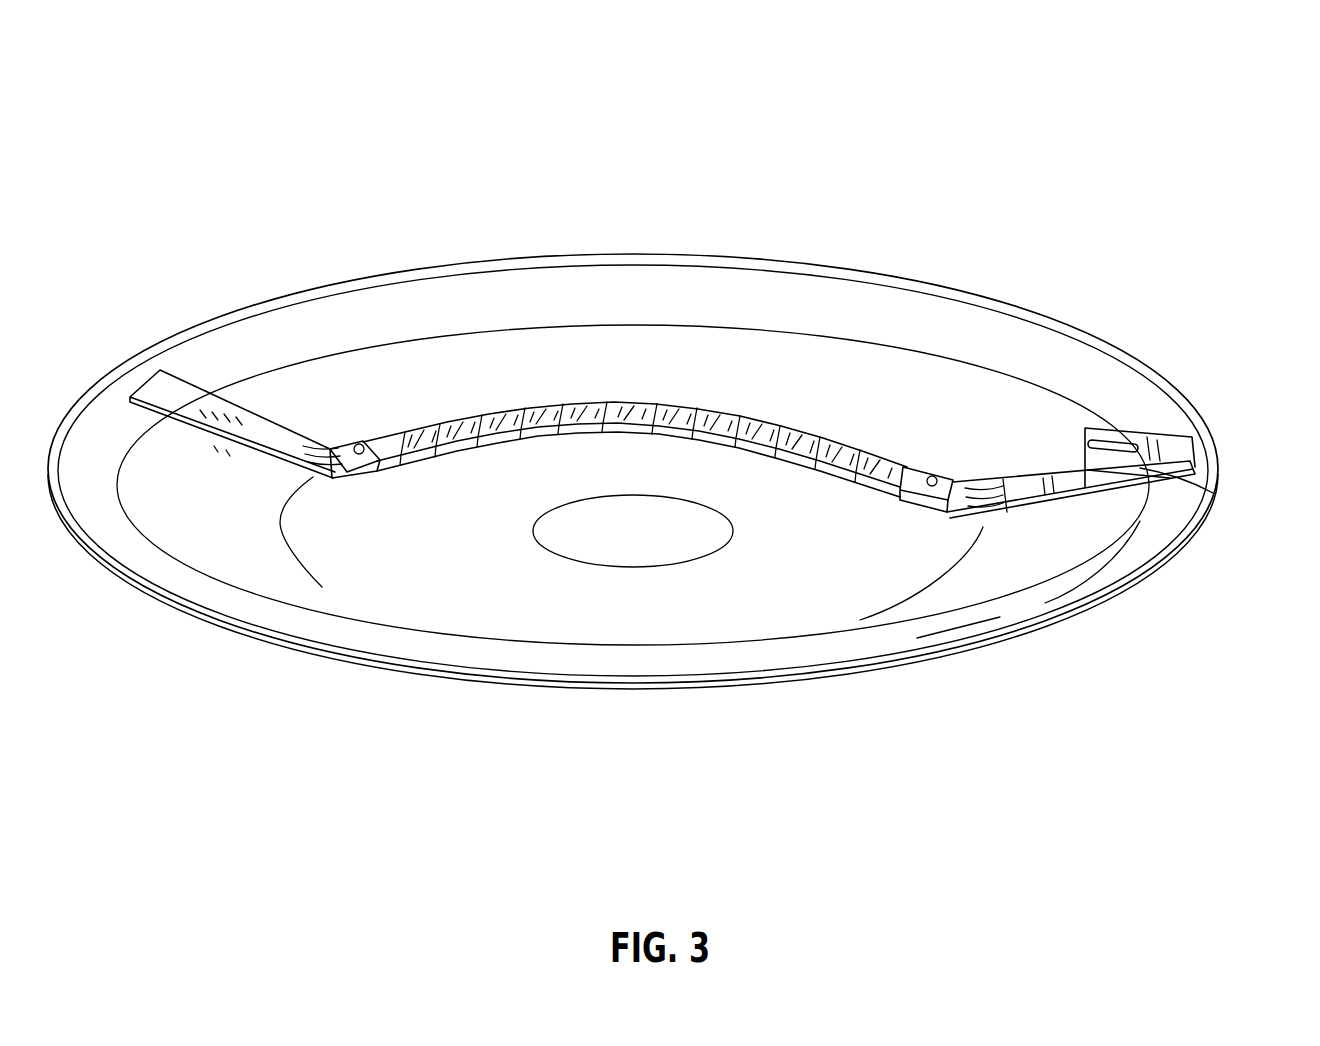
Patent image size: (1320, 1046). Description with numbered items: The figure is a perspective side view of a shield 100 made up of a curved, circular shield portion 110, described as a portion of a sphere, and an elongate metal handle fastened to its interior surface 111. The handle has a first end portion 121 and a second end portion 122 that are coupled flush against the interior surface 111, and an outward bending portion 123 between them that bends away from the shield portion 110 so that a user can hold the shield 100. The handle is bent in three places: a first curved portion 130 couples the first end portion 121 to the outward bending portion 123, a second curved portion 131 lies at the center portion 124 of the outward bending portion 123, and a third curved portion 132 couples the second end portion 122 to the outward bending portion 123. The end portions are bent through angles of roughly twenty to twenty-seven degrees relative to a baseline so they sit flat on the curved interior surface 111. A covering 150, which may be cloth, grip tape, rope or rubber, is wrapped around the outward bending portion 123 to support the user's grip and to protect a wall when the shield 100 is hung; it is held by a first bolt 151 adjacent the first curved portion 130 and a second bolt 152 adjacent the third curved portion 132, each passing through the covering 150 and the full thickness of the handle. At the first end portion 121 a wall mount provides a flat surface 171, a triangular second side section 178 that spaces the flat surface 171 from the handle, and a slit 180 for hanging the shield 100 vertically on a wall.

The shield 100 is at (1196, 164).
The shield portion 110 is at (427, 670).
The interior surface 111 is at (615, 542).
The first end portion 121 is at (1060, 503).
The second end portion 122 is at (272, 427).
The outward bending portion 123 is at (487, 407).
The center portion 124 is at (645, 405).
The first curved portion 130 is at (980, 523).
The second curved portion 131 is at (648, 434).
The third curved portion 132 is at (273, 522).
The covering 150 is at (836, 441).
The first bolt 151 is at (932, 478).
The second bolt 152 is at (357, 446).
The flat surface 171 is at (1167, 445).
The second side section 178 is at (1205, 497).
The slit 180 is at (1117, 447).